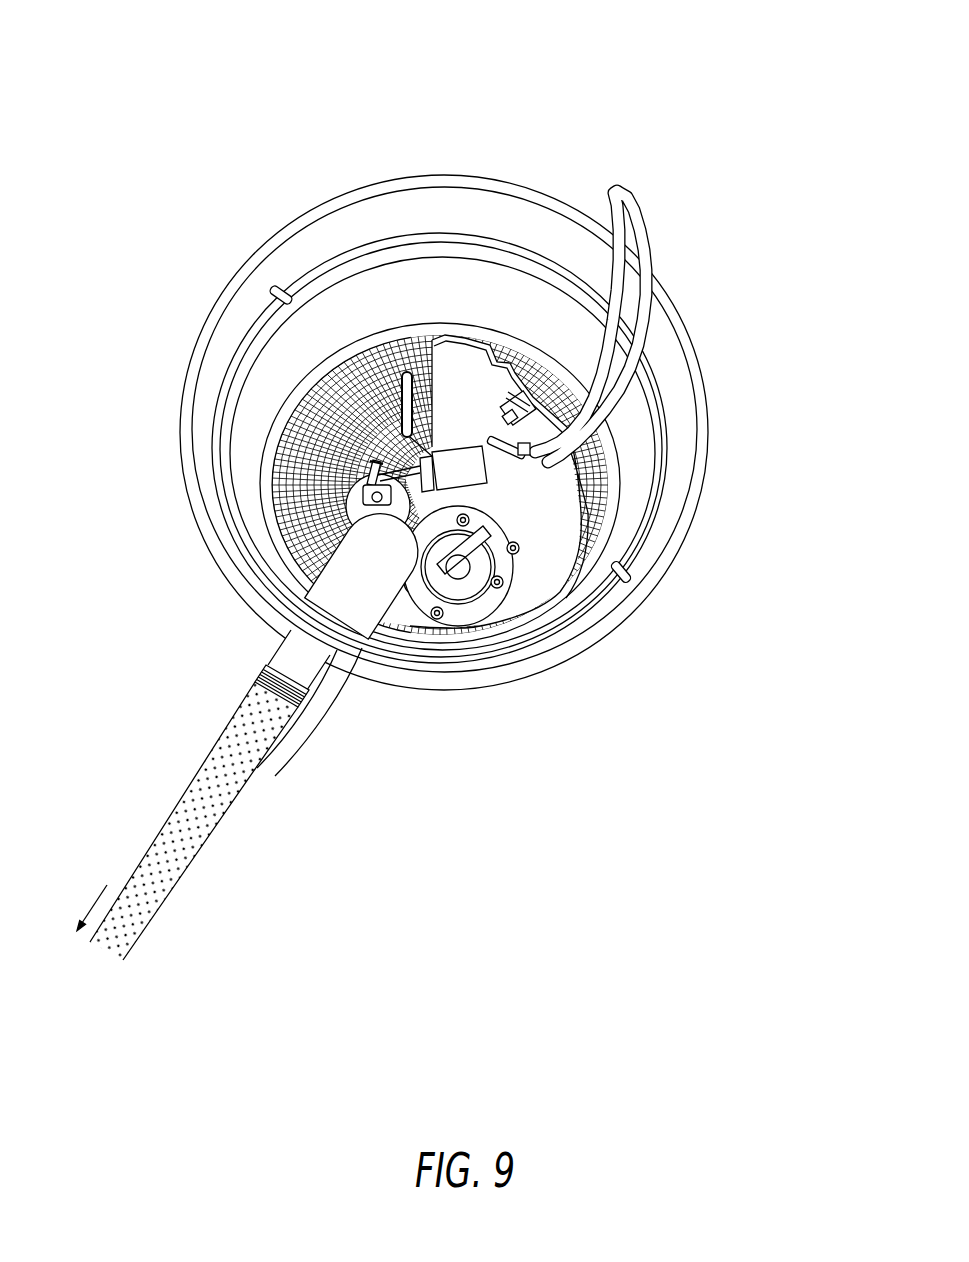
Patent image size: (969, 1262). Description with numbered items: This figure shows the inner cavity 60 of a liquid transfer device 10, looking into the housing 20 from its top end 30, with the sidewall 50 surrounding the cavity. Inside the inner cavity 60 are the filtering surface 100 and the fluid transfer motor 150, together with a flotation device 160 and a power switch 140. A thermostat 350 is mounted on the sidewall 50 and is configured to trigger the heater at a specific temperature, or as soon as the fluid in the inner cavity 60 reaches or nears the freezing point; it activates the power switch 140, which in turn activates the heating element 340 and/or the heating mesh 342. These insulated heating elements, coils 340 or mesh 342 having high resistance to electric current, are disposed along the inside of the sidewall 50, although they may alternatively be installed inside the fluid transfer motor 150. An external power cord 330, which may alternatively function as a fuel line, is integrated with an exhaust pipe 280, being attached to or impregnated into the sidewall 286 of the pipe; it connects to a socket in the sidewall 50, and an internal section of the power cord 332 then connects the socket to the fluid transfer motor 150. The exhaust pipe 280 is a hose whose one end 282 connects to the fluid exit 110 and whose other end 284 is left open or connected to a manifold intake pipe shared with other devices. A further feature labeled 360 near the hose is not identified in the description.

The liquid transfer device 10 is at (462, 46).
The housing 20 is at (460, 153).
The top end 30 is at (516, 183).
The sidewall 50 is at (232, 259).
The inner cavity 60 is at (348, 232).
The filtering surface 100 is at (285, 512).
The fluid exit 110 is at (433, 622).
The power switch 140 is at (463, 462).
The fluid transfer motor 150 is at (501, 613).
The flotation device 160 is at (355, 503).
The exhaust pipe 280 is at (205, 861).
The one end 282 is at (268, 668).
The other end 284 is at (100, 894).
The sidewall 286 is at (198, 762).
The power cord 330 is at (634, 227).
The internal section of the power cord 332 is at (450, 632).
The heating element 340 is at (522, 257).
The heating mesh 342 is at (397, 343).
The thermostat 350 is at (413, 393).
The hose fitting 360 is at (237, 776).